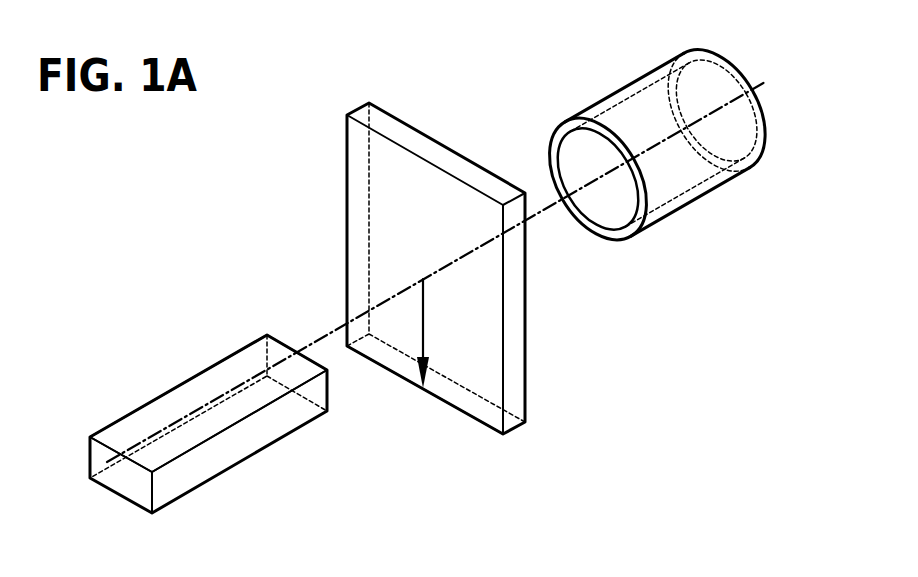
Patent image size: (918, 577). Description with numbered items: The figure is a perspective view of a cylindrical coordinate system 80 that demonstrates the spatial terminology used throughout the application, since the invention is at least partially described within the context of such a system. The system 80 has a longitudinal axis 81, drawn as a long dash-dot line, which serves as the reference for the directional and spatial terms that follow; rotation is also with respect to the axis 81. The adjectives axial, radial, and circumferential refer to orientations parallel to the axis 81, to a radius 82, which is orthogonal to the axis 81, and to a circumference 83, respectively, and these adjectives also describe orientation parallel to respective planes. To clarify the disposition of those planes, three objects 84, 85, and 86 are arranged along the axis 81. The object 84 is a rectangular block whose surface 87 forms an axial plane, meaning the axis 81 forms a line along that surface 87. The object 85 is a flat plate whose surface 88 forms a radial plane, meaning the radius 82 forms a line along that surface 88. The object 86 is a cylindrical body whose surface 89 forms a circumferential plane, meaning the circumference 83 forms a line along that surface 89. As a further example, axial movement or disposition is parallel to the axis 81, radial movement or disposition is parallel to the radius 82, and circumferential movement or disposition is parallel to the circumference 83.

The cylindrical coordinate system 80 is at (312, 134).
The longitudinal axis 81 is at (759, 82).
The radius 82 is at (423, 320).
The circumference 83 is at (597, 178).
The object 84 is at (208, 444).
The object 85 is at (439, 280).
The object 86 is at (660, 149).
The surface 87 is at (177, 400).
The surface 88 is at (363, 236).
The surface 89 is at (657, 139).